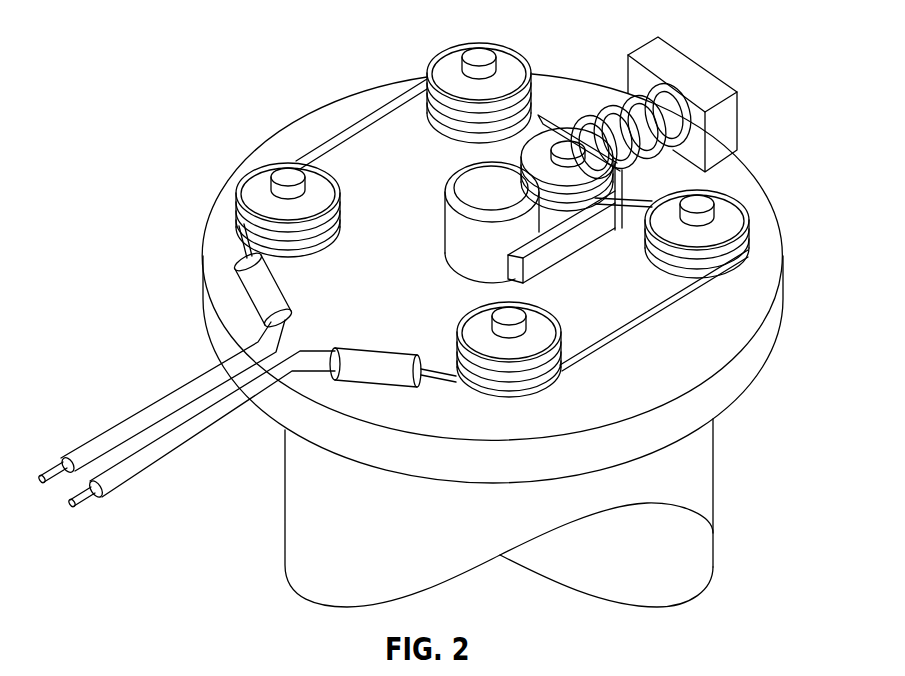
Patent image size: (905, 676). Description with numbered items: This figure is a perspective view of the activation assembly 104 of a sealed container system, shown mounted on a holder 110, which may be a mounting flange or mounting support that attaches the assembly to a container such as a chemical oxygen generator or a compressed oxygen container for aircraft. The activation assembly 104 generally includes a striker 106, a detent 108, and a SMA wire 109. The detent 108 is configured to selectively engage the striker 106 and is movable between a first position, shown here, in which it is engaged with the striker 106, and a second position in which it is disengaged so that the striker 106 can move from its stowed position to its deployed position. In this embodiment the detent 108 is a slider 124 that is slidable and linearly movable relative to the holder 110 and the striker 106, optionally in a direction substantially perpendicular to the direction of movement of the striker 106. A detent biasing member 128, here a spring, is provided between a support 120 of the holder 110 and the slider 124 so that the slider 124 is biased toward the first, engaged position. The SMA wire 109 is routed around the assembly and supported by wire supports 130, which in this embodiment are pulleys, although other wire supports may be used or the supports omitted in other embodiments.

The activation assembly 104 is at (248, 52).
The striker 106 is at (453, 230).
The detent 108 is at (568, 143).
The SMA wire 109 is at (363, 118).
The holder 110 is at (700, 462).
The support 120 is at (713, 88).
The slider 124 is at (552, 229).
The detent biasing member 128 is at (626, 85).
The wire supports 130 is at (253, 182).